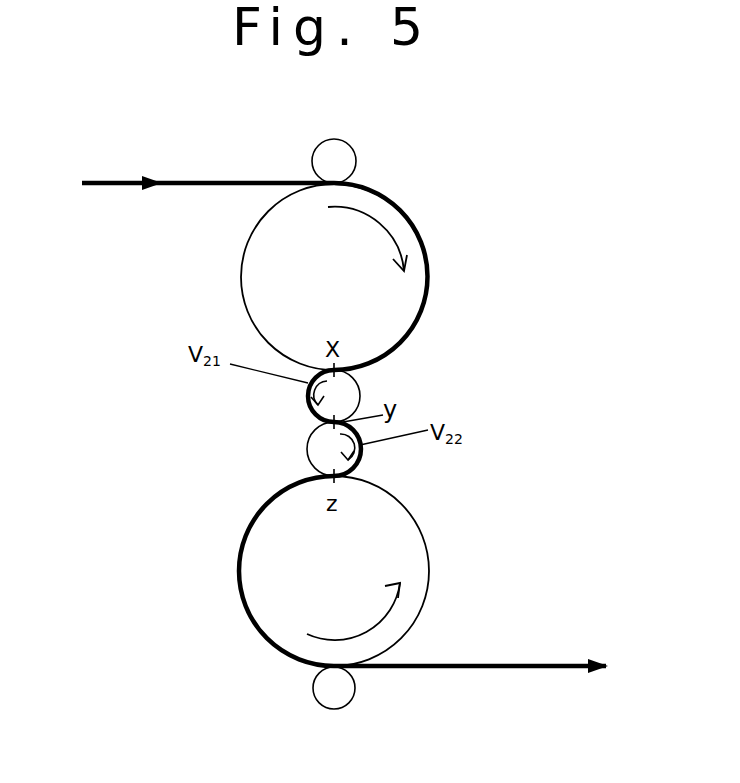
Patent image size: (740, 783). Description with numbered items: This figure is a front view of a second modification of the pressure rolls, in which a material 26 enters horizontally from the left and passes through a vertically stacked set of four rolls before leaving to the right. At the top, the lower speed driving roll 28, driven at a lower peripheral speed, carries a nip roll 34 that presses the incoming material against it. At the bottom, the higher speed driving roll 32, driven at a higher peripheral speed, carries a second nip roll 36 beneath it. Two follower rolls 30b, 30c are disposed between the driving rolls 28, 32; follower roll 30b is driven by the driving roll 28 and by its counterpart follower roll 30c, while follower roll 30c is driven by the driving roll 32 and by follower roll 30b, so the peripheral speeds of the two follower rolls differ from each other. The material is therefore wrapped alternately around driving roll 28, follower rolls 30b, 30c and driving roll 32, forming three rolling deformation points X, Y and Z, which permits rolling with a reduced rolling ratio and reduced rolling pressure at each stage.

The web / sheet material 26 is at (110, 181).
The nip roll 34 is at (353, 160).
The lower speed driving roll 28 is at (408, 297).
The follower roll 30b is at (352, 393).
The follower roll 30c is at (320, 452).
The higher speed driving roll 32 is at (412, 548).
The nip roll 36 is at (345, 692).